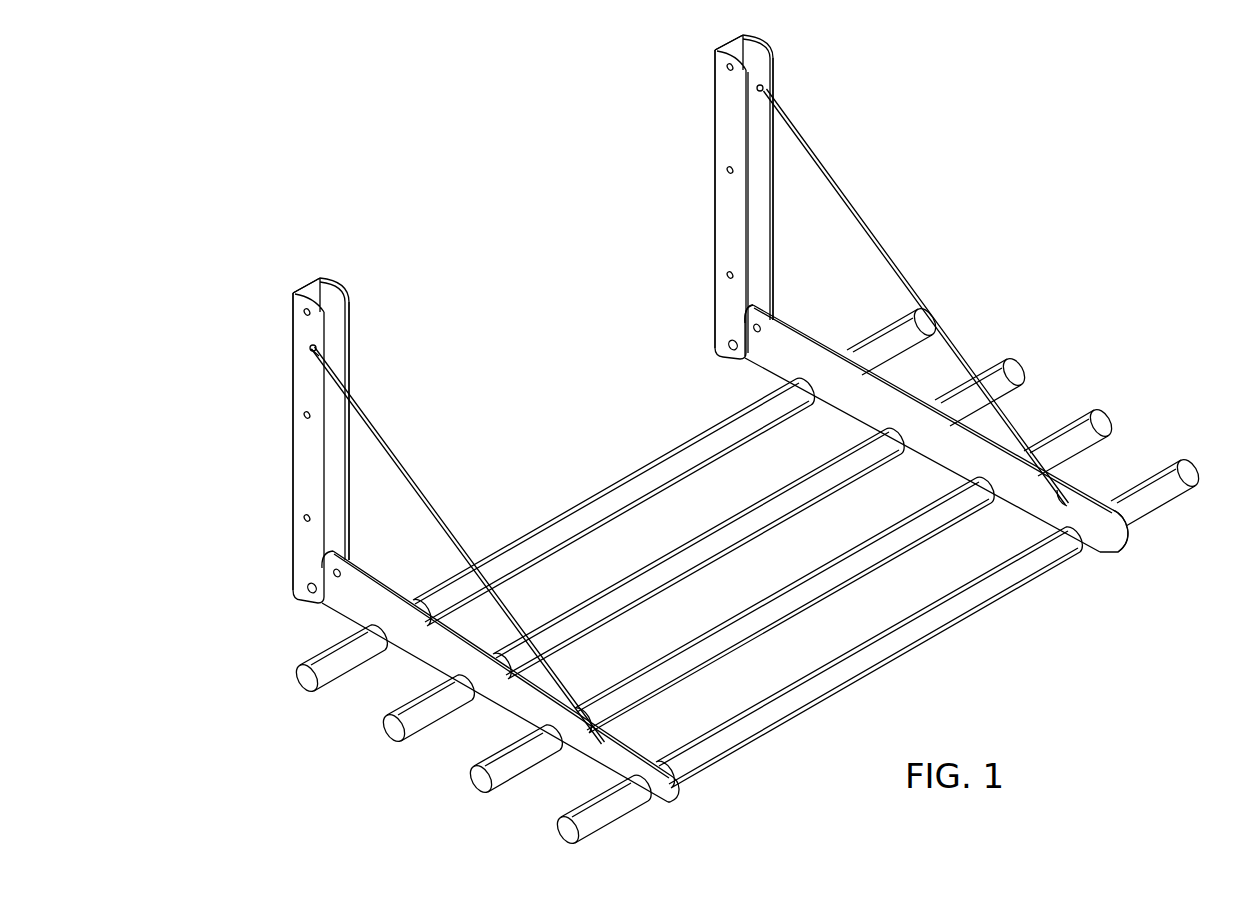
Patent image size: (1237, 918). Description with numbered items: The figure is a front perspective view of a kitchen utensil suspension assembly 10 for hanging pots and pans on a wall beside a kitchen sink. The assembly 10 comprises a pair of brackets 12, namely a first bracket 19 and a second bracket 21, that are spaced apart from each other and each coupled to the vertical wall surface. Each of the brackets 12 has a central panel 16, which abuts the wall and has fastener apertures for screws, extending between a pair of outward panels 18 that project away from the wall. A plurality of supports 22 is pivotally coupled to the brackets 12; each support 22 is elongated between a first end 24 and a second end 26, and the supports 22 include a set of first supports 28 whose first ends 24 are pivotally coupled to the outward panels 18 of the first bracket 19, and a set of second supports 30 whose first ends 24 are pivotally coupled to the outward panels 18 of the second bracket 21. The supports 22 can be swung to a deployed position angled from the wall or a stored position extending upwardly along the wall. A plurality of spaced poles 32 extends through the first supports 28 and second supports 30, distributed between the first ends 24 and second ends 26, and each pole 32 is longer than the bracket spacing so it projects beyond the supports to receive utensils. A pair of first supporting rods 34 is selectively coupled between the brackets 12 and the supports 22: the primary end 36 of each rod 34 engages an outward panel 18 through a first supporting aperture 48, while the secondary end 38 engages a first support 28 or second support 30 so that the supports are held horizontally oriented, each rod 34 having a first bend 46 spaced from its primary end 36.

The kitchen utensil suspension assembly 10 is at (257, 222).
The bracket 12 is at (298, 298).
The central panel 16 is at (316, 283).
The outward panel 18 is at (326, 340).
The first bracket 19 is at (286, 455).
The second bracket 21 is at (790, 60).
The support 22 is at (972, 452).
The first end 24 is at (768, 287).
The second end 26 is at (1130, 535).
The first support 28 is at (400, 565).
The second support 30 is at (924, 379).
The pole 32 is at (637, 602).
The first supporting rod 34 is at (374, 426).
The primary end 36 is at (758, 89).
The secondary end 38 is at (1060, 498).
The first bend 46 is at (311, 348).
The first supporting aperture 48 is at (315, 355).